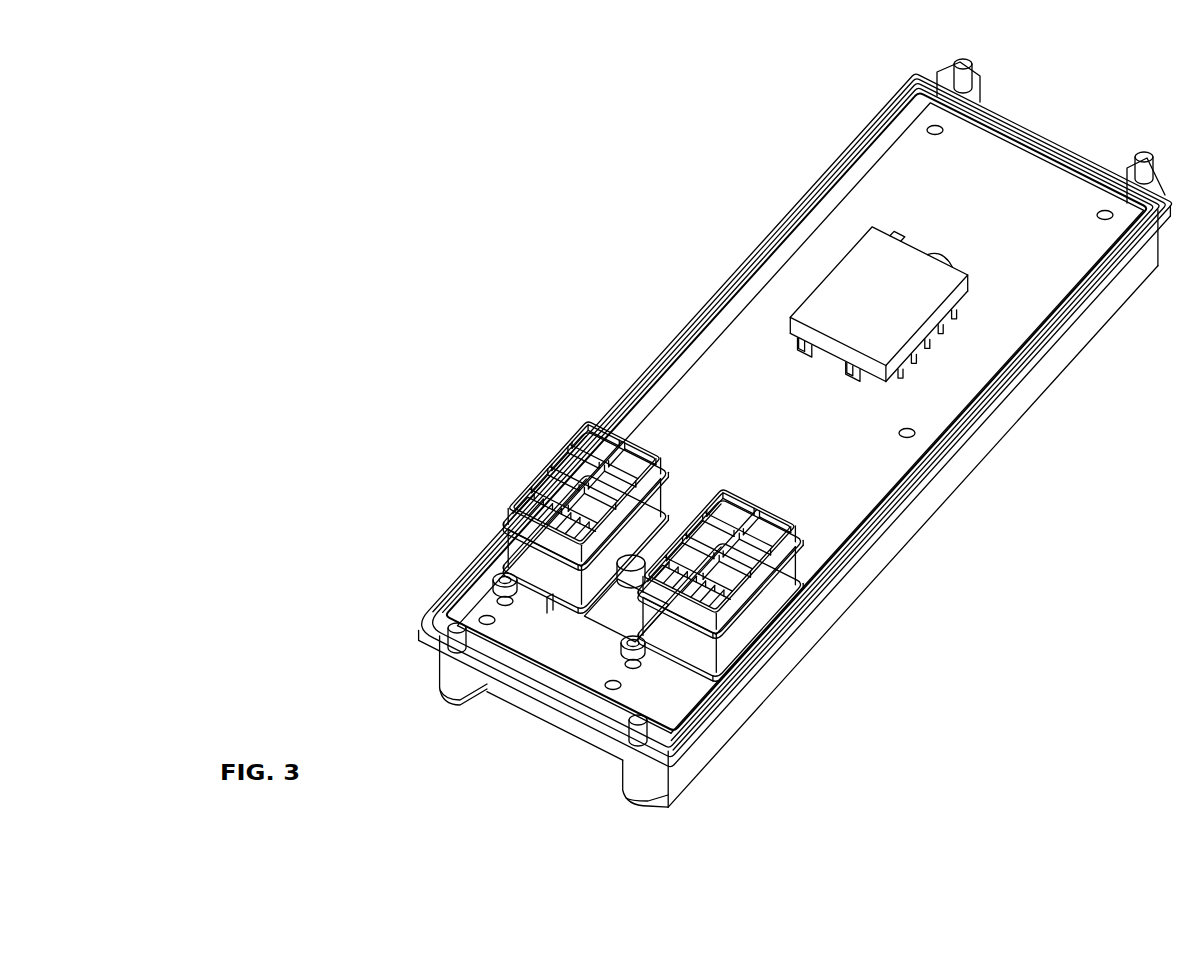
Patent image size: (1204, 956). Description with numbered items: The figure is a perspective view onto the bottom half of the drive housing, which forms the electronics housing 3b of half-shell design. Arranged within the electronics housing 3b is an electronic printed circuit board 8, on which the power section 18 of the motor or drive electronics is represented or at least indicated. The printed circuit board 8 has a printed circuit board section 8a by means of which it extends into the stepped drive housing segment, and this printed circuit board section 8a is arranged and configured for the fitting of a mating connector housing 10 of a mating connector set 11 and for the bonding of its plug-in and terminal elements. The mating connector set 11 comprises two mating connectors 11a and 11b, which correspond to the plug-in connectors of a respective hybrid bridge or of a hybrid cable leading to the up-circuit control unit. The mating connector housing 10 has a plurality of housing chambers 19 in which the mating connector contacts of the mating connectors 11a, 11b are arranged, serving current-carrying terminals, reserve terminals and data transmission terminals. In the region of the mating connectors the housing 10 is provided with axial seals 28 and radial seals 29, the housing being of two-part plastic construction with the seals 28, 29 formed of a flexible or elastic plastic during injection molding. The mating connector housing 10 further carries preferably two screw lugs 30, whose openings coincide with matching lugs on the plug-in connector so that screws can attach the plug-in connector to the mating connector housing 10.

The electronics housing 3b is at (1113, 290).
The electronic printed circuit board 8 is at (912, 183).
The printed circuit board section 8a is at (587, 650).
The mating connector housing 10 is at (508, 567).
The mating connector set 11 is at (430, 394).
The mating connector 11a is at (578, 428).
The mating connector 11b is at (723, 490).
The power section 18 is at (857, 300).
The housing chambers 19 is at (567, 478).
The axial seals 28 is at (690, 640).
The radial seals 29 is at (747, 593).
The screw lugs 30 is at (496, 570).